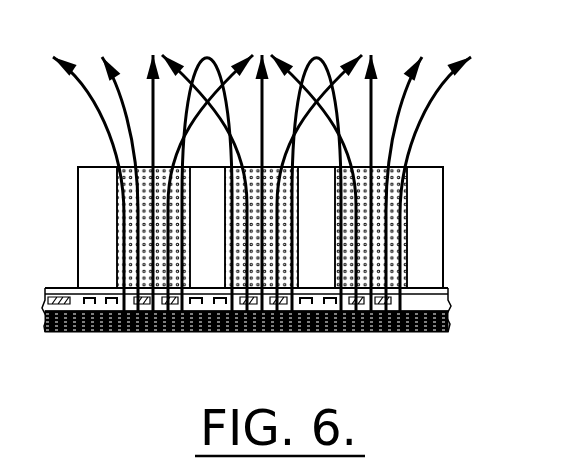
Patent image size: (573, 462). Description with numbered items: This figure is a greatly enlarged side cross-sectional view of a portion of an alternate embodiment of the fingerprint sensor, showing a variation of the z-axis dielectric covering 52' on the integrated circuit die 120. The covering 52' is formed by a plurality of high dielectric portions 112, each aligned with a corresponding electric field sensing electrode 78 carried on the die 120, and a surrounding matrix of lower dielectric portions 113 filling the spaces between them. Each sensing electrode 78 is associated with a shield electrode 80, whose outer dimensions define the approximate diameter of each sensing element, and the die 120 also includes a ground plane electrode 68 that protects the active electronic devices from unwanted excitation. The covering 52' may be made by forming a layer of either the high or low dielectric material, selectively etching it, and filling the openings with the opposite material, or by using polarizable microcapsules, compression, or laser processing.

The z-axis dielectric covering 52' is at (298, 218).
The high dielectric portions 112 is at (227, 183).
The lower dielectric portions 113 is at (318, 185).
The integrated circuit die 120 is at (291, 324).
The ground plane electrode 68 is at (82, 333).
The sensing electrode 78 is at (242, 330).
The shield electrode 80 is at (112, 304).